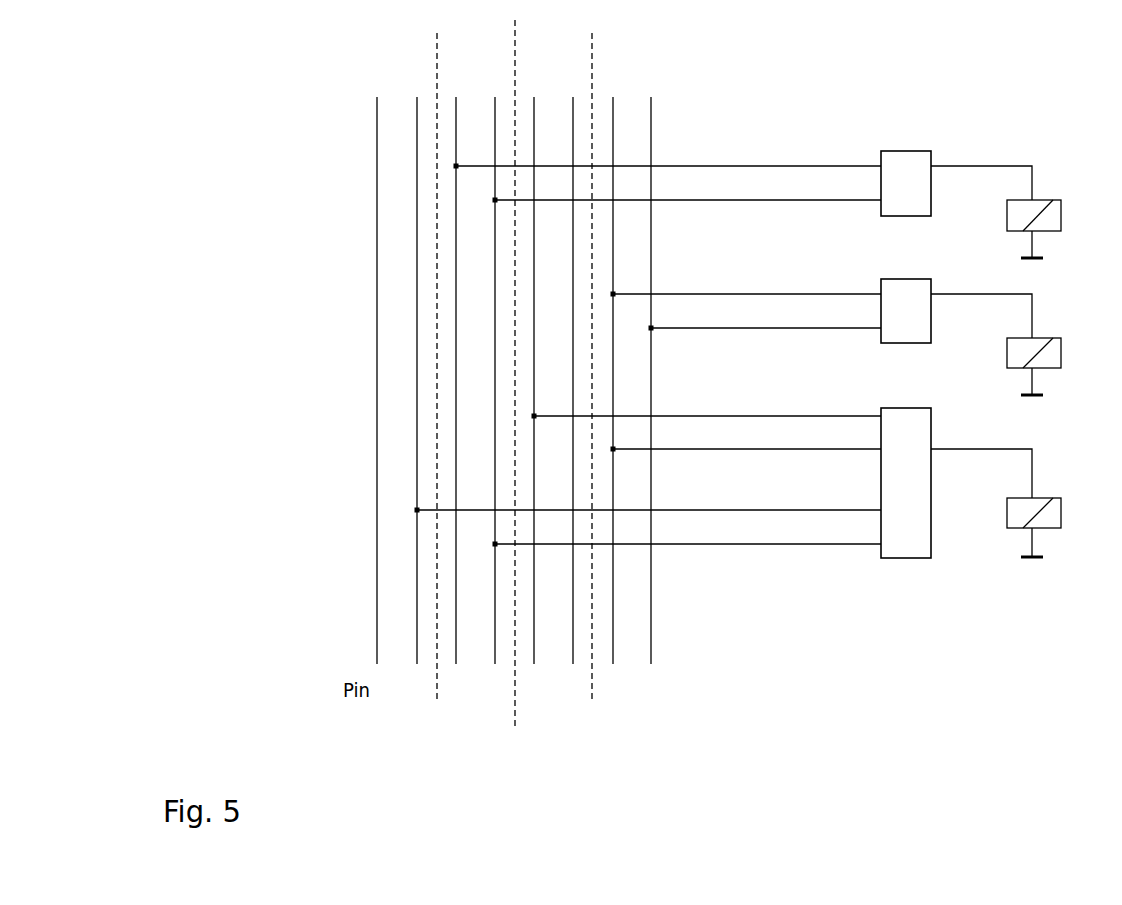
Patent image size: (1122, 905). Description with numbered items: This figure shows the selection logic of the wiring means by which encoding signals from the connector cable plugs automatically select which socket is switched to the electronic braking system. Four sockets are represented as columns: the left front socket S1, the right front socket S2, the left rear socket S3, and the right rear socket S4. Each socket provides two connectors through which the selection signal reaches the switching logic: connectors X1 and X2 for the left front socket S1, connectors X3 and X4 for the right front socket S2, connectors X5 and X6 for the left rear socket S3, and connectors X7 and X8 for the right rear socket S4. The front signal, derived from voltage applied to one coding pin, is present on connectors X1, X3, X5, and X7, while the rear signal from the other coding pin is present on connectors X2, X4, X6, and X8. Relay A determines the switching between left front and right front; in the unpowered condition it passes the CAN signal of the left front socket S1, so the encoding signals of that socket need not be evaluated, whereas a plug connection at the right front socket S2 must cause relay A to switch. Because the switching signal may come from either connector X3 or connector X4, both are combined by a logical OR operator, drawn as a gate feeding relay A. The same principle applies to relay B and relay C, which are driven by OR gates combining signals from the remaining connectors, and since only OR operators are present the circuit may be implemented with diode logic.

The left front socket S1 is at (407, 366).
The right front socket S2 is at (487, 375).
The left rear socket S3 is at (563, 365).
The right rear socket S4 is at (631, 347).
The connector X1 is at (377, 387).
The connector X2 is at (417, 387).
The connector X3 is at (456, 387).
The connector X4 is at (495, 387).
The connector X5 is at (534, 387).
The connector X6 is at (573, 387).
The connector X7 is at (613, 387).
The connector X8 is at (651, 387).
The relay A is at (777, 204).
The relay B is at (855, 337).
The relay C is at (757, 483).